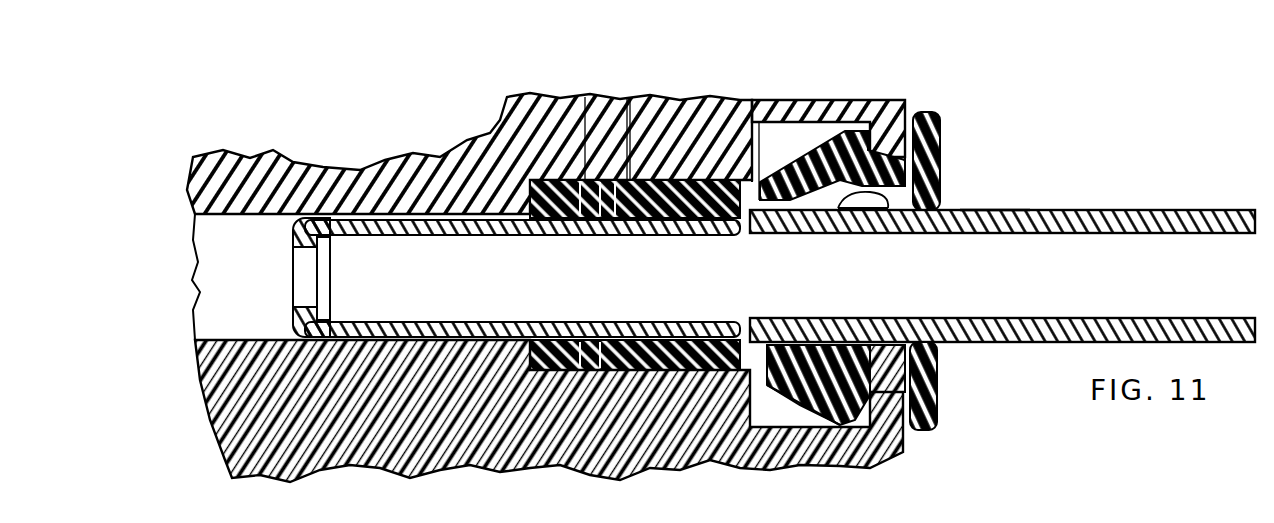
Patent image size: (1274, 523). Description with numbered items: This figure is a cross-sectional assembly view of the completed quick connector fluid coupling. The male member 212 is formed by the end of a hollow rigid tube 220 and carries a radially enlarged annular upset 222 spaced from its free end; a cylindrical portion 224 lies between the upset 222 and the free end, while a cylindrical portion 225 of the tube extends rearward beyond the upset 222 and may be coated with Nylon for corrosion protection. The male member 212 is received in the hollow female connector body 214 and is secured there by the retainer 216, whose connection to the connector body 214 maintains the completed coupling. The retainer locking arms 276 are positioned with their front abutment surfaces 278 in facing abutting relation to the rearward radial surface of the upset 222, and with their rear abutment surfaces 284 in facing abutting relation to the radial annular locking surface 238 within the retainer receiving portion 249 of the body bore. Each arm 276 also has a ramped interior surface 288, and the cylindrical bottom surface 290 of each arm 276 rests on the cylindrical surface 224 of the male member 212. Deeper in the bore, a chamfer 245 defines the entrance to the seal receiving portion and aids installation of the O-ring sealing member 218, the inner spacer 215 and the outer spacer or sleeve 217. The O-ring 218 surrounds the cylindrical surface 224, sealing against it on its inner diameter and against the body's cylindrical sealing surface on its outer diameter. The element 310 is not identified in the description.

The inner spacer 215 is at (582, 128).
The outer spacer or sleeve 217 is at (627, 88).
The retainer 216 is at (845, 140).
The rear abutment surface 284 is at (905, 98).
The chamfer 245 is at (752, 124).
The radially enlarged annular upset 222 is at (762, 182).
The male member 212 is at (784, 236).
The ramped interior surface 288 is at (812, 238).
The cylindrical bottom surface 290 is at (850, 240).
The sealing member 218 is at (572, 237).
The lower seal ring 310 is at (705, 238).
The cylindrical portion 224 is at (458, 236).
The hollow rigid tube 220 is at (1086, 210).
The cylindrical portion 225 is at (995, 210).
The front abutment surface 278 is at (750, 237).
The hollow female connector body 214 is at (724, 460).
The arm 276 is at (822, 350).
The radially directed annular abutment or locking surface 238 is at (937, 430).
The retainer receiving portion 249 is at (790, 415).